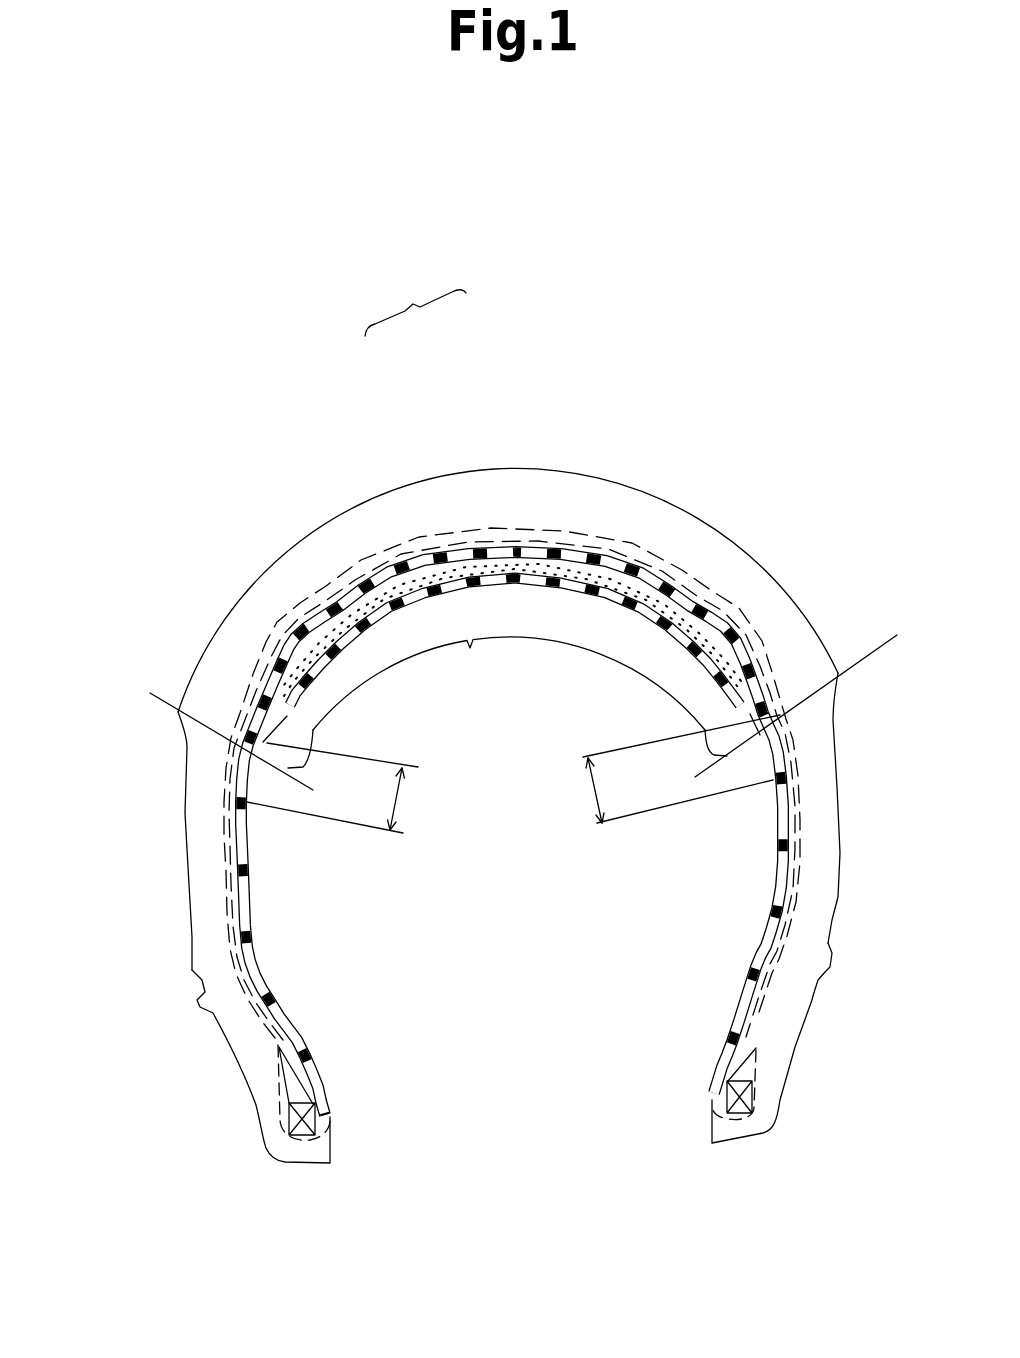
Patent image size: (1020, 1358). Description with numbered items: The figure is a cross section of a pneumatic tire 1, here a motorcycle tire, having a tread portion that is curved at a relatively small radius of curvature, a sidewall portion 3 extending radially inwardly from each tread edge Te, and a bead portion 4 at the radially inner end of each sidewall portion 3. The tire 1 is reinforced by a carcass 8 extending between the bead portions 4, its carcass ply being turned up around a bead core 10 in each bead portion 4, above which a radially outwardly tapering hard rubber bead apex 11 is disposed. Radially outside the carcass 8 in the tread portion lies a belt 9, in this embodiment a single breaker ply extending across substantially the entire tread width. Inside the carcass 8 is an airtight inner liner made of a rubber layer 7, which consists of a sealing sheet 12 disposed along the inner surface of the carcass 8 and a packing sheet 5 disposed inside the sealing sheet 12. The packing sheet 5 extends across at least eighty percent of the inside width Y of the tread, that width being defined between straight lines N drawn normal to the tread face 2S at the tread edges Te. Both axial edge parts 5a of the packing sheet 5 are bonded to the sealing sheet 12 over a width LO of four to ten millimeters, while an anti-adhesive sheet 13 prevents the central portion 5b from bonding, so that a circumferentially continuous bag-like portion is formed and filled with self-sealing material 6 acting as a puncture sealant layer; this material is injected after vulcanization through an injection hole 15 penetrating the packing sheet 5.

The pneumatic tire 1 is at (480, 727).
The tread face 2S is at (317, 533).
The sidewall portion 3 is at (187, 865).
The bead portion 4 is at (238, 1112).
The packing sheet 5 is at (511, 524).
The axial edge parts of the packing sheet 5a is at (513, 811).
The central portion of the packing sheet 5b is at (613, 603).
The self-sealing material 6 is at (537, 726).
The rubber layer 7 is at (415, 293).
The carcass 8 is at (228, 897).
The belt 9 is at (265, 640).
The bead core 10 is at (755, 1119).
The bead apex 11 is at (750, 1050).
The sealing sheet 12 is at (392, 568).
The anti-adhesive sheet 13 is at (613, 563).
The injection hole 15 is at (513, 573).
The tread edges Te is at (155, 712).
The straight lines normal to the tread face N is at (203, 730).
The inside width of the tread portion Y is at (507, 702).
The width of the bonded edge part LO is at (393, 800).